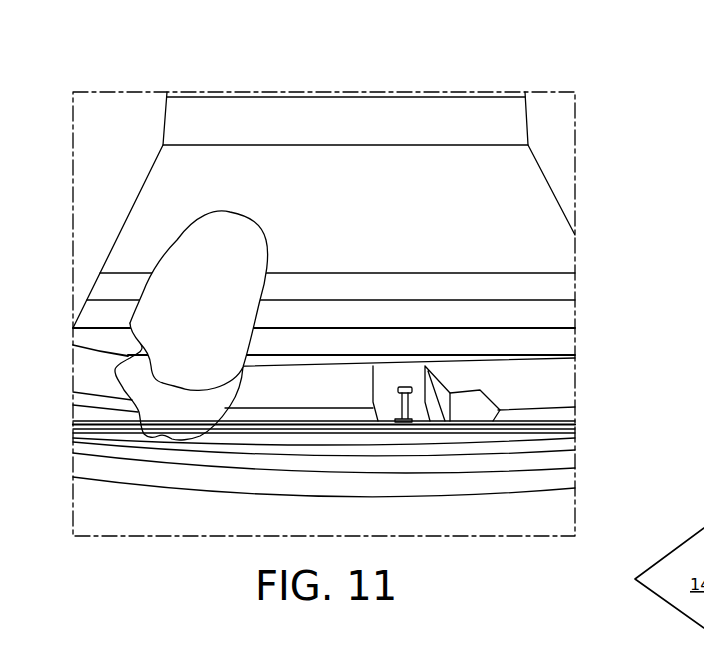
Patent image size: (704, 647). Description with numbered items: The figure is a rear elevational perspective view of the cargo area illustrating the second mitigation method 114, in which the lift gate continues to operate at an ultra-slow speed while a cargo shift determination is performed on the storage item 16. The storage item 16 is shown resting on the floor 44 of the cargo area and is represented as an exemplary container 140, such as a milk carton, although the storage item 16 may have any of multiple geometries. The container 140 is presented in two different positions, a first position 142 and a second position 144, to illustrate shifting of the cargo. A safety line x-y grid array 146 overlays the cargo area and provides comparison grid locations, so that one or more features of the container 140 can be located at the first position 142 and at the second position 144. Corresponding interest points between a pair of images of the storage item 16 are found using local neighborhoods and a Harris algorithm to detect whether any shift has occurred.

The second mitigation method 114 is at (603, 73).
The storage item 16 is at (249, 193).
The floor 44 is at (540, 217).
The container 140 is at (197, 238).
The first position 142 is at (113, 323).
The second position 144 is at (117, 373).
The safety line x-y grid array 146 is at (555, 273).